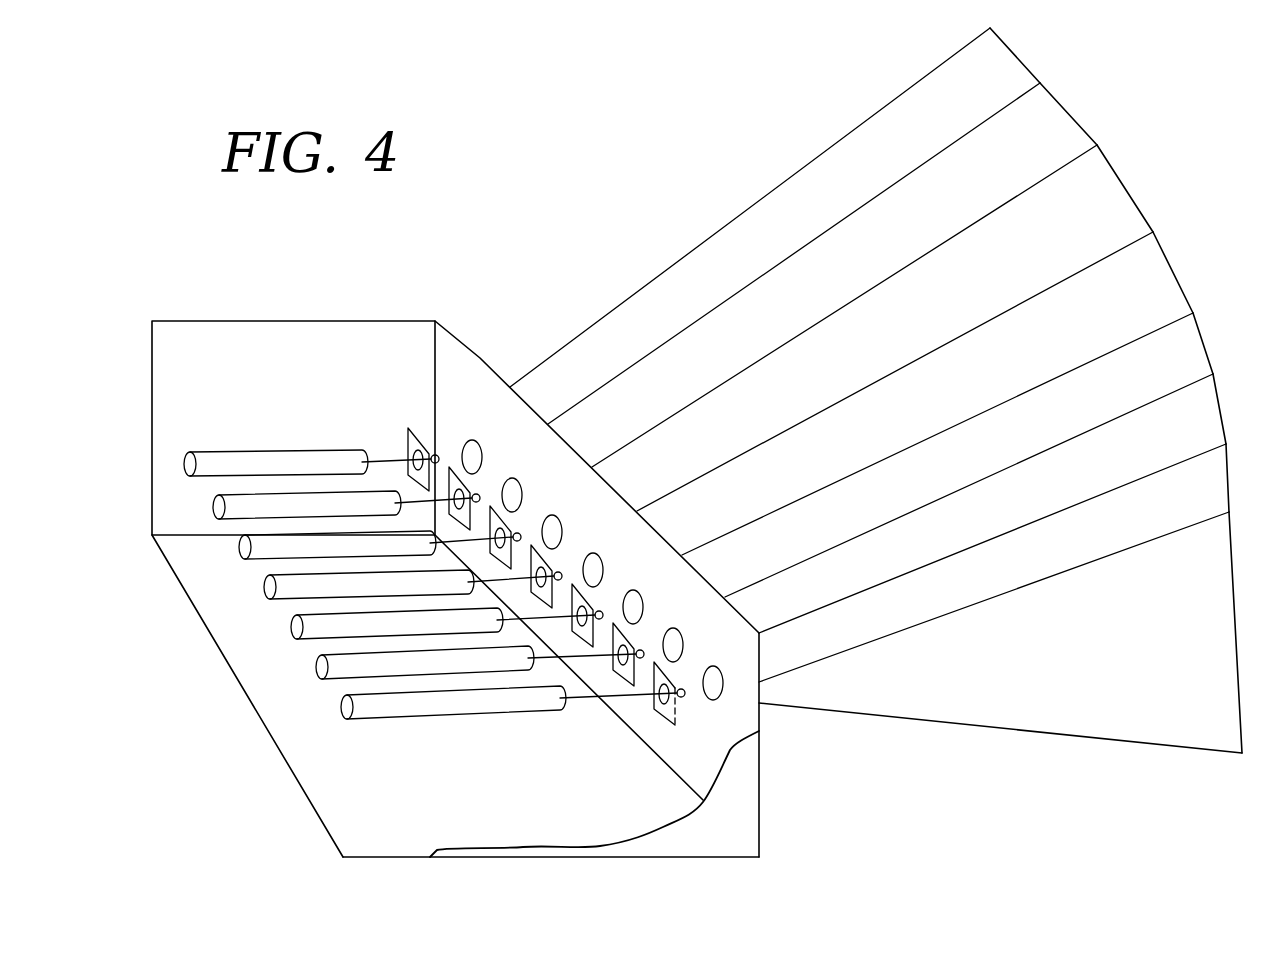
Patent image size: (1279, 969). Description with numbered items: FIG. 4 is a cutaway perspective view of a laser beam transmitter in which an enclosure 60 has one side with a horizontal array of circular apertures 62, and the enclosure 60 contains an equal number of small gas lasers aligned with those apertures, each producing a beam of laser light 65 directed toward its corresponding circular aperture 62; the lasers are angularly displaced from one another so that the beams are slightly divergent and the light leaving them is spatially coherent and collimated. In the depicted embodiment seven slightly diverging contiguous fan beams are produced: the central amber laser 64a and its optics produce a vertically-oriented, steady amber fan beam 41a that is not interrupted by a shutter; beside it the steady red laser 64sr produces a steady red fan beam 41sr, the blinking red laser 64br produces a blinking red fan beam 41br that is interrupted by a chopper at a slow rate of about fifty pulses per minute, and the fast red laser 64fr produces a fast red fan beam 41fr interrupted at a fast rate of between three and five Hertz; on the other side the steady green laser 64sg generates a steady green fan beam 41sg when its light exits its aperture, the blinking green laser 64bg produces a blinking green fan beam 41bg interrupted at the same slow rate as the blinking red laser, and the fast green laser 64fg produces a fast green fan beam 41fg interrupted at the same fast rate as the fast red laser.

The enclosure 60 is at (268, 322).
The circular aperture 62 is at (711, 698).
The beam of laser light 65 is at (383, 462).
The fast green laser 64fg is at (184, 466).
The blinking green laser 64bg is at (213, 507).
The steady green laser 64sg is at (239, 547).
The central amber laser 64a is at (264, 587).
The steady red laser 64sr is at (291, 627).
The blinking red laser 64br is at (316, 667).
The fast red laser 64fr is at (341, 707).
The fast green fan beam 41fg is at (775, 226).
The blinking green fan beam 41bg is at (844, 275).
The steady green fan beam 41sg is at (895, 328).
The amber fan beam 41a is at (937, 393).
The steady red fan beam 41sr is at (969, 455).
The blinking red fan beam 41br is at (992, 503).
The fast red fan beam 41fr is at (994, 563).